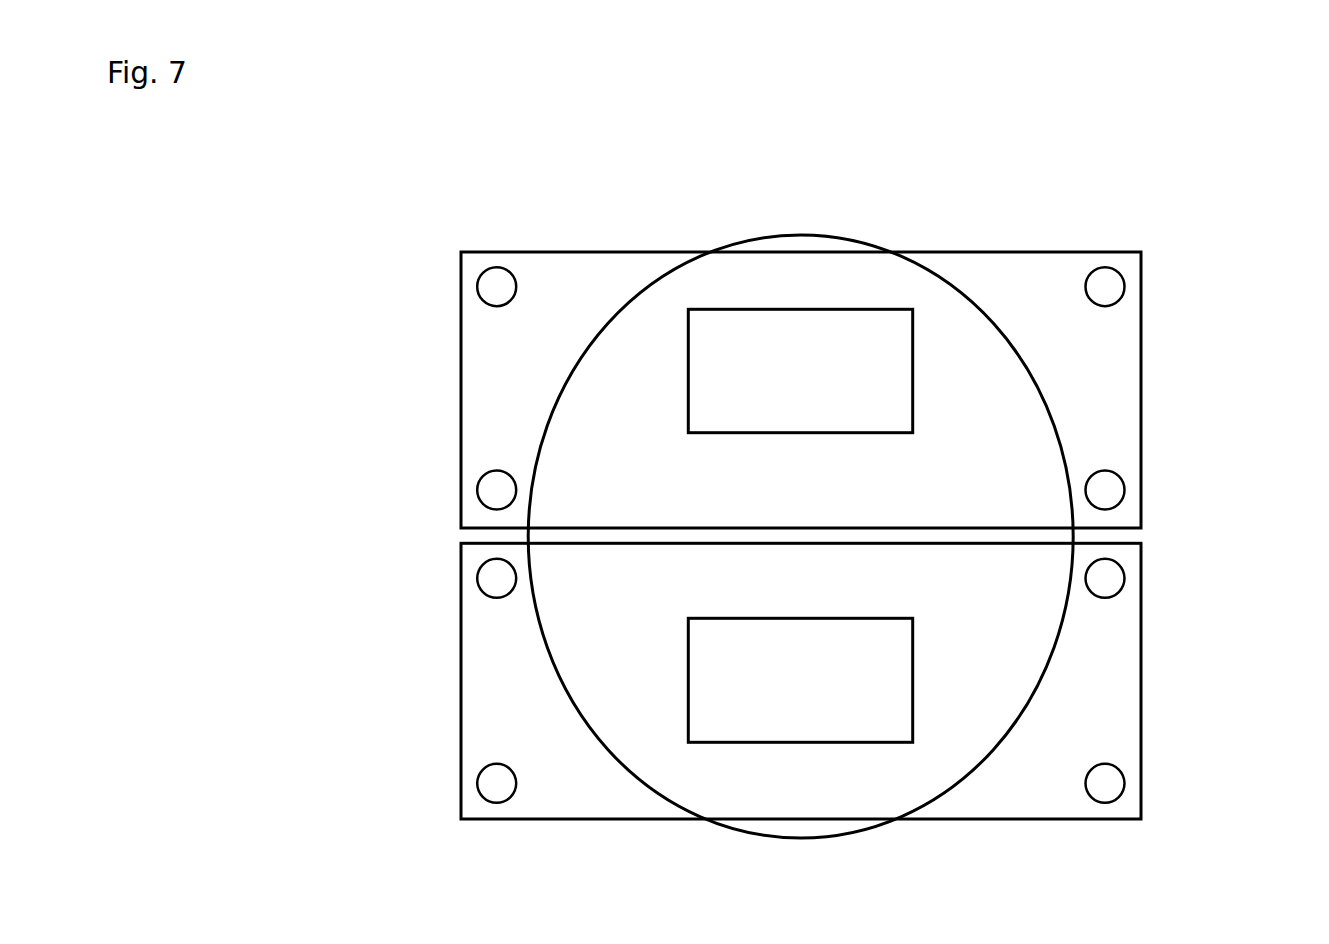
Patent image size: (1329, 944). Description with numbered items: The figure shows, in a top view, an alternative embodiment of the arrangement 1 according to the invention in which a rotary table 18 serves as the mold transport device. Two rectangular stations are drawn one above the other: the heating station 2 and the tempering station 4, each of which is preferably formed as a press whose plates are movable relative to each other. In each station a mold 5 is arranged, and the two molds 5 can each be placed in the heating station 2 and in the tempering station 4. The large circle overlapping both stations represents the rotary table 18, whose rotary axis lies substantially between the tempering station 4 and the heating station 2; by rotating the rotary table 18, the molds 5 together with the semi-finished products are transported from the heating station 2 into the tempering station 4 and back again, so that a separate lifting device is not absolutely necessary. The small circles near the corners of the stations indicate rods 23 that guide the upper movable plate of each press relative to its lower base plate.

The mold assembly 1 is at (396, 204).
The heating station 2 is at (1102, 398).
The tempering station 4 is at (1102, 695).
The mold 5 is at (811, 382).
The rotary table 18 is at (977, 365).
The rod 23 is at (495, 286).